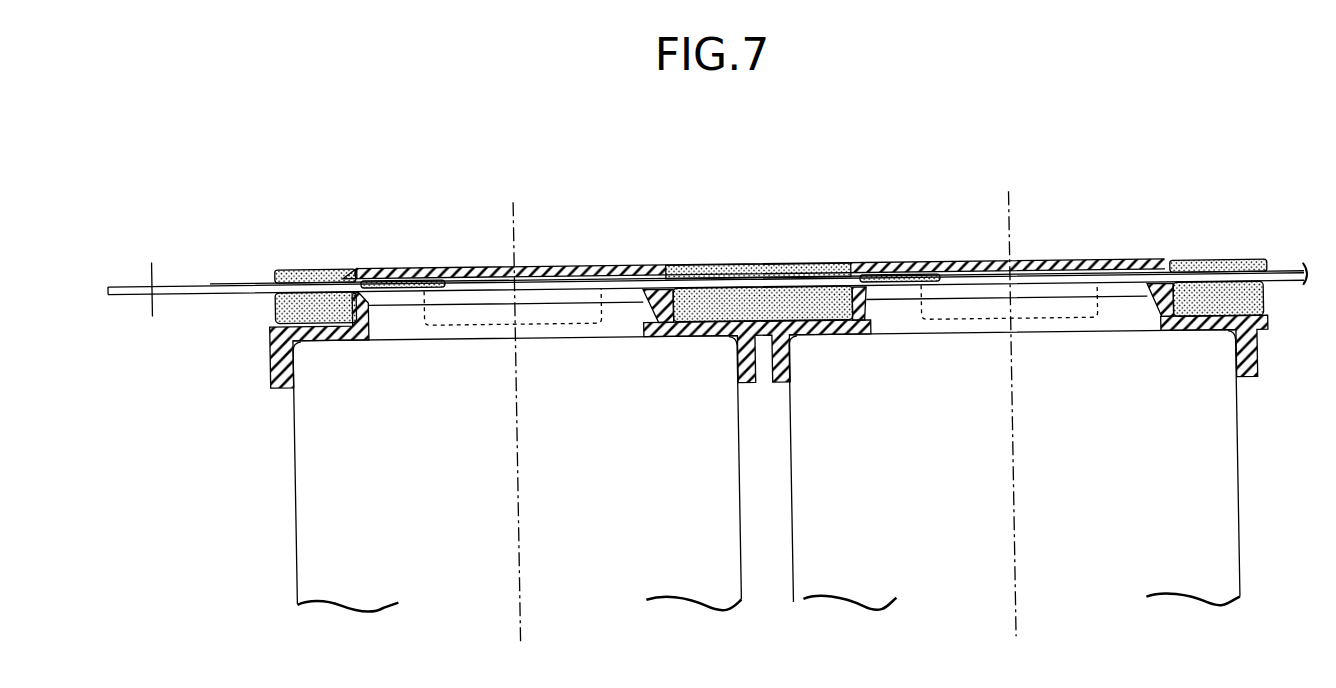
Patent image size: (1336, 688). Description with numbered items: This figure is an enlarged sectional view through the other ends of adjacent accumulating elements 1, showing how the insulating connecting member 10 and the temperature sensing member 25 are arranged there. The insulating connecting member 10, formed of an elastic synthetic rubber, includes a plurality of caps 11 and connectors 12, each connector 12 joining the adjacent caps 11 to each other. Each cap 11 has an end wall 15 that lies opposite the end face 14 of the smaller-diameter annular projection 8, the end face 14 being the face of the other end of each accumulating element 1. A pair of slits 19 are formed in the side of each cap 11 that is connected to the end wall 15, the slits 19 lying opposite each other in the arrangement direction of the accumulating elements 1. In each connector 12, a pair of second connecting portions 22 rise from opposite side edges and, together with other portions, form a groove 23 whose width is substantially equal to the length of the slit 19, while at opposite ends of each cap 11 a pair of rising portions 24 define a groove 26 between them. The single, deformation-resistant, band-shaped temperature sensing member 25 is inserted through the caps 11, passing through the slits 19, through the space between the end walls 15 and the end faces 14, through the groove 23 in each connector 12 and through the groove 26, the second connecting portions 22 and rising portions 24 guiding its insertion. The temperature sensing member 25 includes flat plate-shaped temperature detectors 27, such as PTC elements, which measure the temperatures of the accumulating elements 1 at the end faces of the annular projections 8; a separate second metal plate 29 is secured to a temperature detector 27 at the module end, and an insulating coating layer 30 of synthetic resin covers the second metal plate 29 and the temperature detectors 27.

The accumulating element 1 is at (294, 495).
The annular projection 8 is at (626, 330).
The insulating connecting member 10 is at (551, 265).
The cap 11 is at (759, 207).
The connector 12 is at (791, 265).
The end face 14 is at (618, 277).
The end wall 15 is at (493, 265).
The slit 19 is at (348, 283).
The second connecting portion 22 is at (752, 270).
The groove 23 is at (823, 314).
The rising portion 24 is at (302, 267).
The temperature sensing member 25 is at (1286, 280).
The groove 26 is at (327, 316).
The temperature detector 27 is at (404, 306).
The second metal plate 29 is at (131, 280).
The insulating coating layer 30 is at (235, 288).